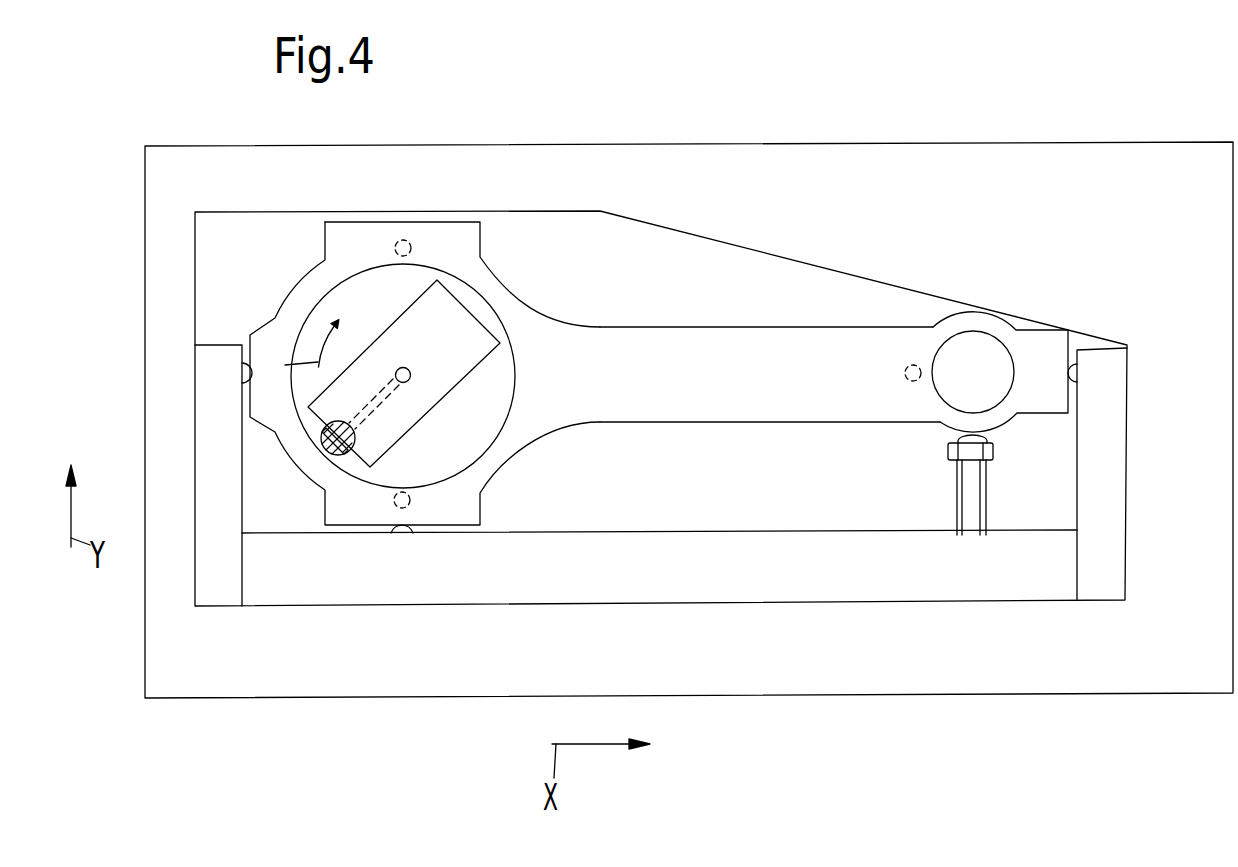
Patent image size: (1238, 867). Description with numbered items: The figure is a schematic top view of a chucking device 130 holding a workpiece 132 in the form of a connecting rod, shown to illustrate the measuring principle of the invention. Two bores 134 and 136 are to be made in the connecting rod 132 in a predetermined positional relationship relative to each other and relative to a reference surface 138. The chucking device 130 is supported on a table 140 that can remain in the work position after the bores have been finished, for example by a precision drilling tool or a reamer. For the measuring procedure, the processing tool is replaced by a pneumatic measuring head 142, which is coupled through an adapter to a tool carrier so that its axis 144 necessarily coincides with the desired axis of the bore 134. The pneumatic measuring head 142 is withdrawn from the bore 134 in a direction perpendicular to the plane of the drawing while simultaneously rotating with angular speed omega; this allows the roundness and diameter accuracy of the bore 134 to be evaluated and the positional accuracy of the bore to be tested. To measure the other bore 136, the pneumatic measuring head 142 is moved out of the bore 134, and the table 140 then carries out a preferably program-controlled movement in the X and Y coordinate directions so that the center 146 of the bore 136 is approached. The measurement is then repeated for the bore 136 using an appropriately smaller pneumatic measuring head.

The chucking device 130 is at (790, 285).
The workpiece 132 is at (637, 353).
The bore 134 is at (320, 320).
The bore 136 is at (990, 353).
The reference surface 138 is at (353, 525).
The table 140 is at (1153, 207).
The pneumatic measuring head 142 is at (434, 315).
The axis 144 is at (398, 370).
The center 146 is at (975, 375).